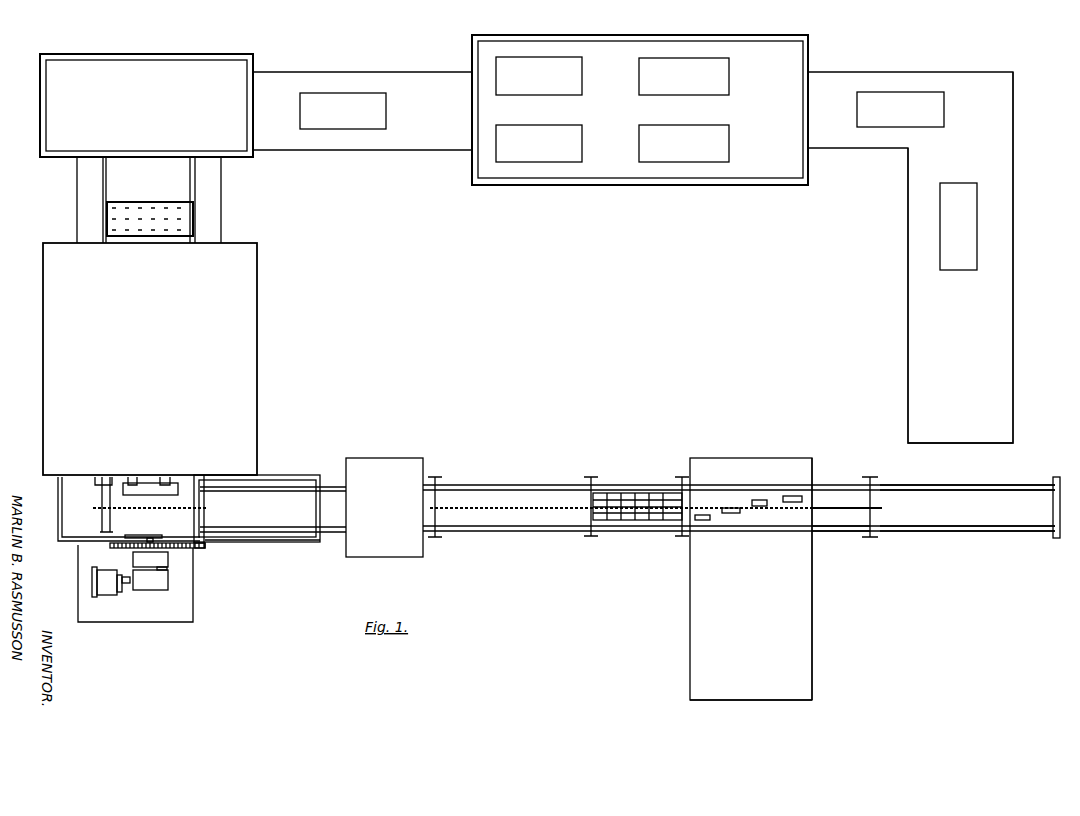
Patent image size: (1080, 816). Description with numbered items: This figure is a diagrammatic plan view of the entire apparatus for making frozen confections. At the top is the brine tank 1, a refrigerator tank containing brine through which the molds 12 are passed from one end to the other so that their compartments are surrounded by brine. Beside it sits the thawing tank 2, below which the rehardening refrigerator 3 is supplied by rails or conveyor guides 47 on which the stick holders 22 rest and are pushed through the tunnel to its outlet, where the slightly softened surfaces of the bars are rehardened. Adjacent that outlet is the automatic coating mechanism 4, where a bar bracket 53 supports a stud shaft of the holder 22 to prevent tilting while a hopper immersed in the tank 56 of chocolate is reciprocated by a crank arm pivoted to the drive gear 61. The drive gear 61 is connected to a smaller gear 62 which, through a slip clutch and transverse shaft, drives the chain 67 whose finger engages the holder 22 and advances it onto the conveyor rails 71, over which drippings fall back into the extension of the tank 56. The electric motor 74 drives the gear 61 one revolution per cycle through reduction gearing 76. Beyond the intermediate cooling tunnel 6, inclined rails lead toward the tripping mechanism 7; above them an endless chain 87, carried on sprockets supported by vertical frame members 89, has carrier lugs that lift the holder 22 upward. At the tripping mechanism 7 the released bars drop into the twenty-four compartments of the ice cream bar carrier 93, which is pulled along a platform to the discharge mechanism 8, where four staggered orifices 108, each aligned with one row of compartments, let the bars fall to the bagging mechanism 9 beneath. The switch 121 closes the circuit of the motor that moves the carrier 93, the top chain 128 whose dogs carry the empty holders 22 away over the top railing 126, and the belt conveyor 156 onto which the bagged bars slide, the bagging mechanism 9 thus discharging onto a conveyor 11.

The brine tank 1 is at (690, 52).
The thawing tank 2 is at (217, 67).
The rehardening refrigerator 3 is at (245, 302).
The automatic coating mechanism 4 is at (63, 502).
The intermediate cooling or refrigerating tunnel 6 is at (390, 466).
The tripping or releasing mechanism 7 is at (637, 500).
The discharge mechanism 8 is at (747, 476).
The bagging mechanism 9 is at (828, 536).
The conveyor 11 is at (822, 592).
The mold 12 is at (386, 109).
The stick holder 22 is at (153, 202).
The rails or conveyor guides 47 is at (103, 181).
The bar bracket 53 is at (148, 483).
The tank 56 is at (242, 542).
The drive gear 61 is at (108, 545).
The smaller gear 62 is at (201, 549).
The chain 67 is at (209, 508).
The conveyor rails 71 is at (293, 480).
The electric motor 74 is at (110, 597).
The reduction gearing 76 is at (157, 590).
The endless chain 87 is at (537, 511).
The vertical frame members 89 is at (591, 538).
The ice cream bar carrier 93 is at (645, 520).
The orifices 108 is at (705, 521).
The switch 121 is at (1013, 434).
The top railing 126 is at (990, 483).
The chain 128 is at (843, 507).
The belt conveyor 156 is at (804, 613).